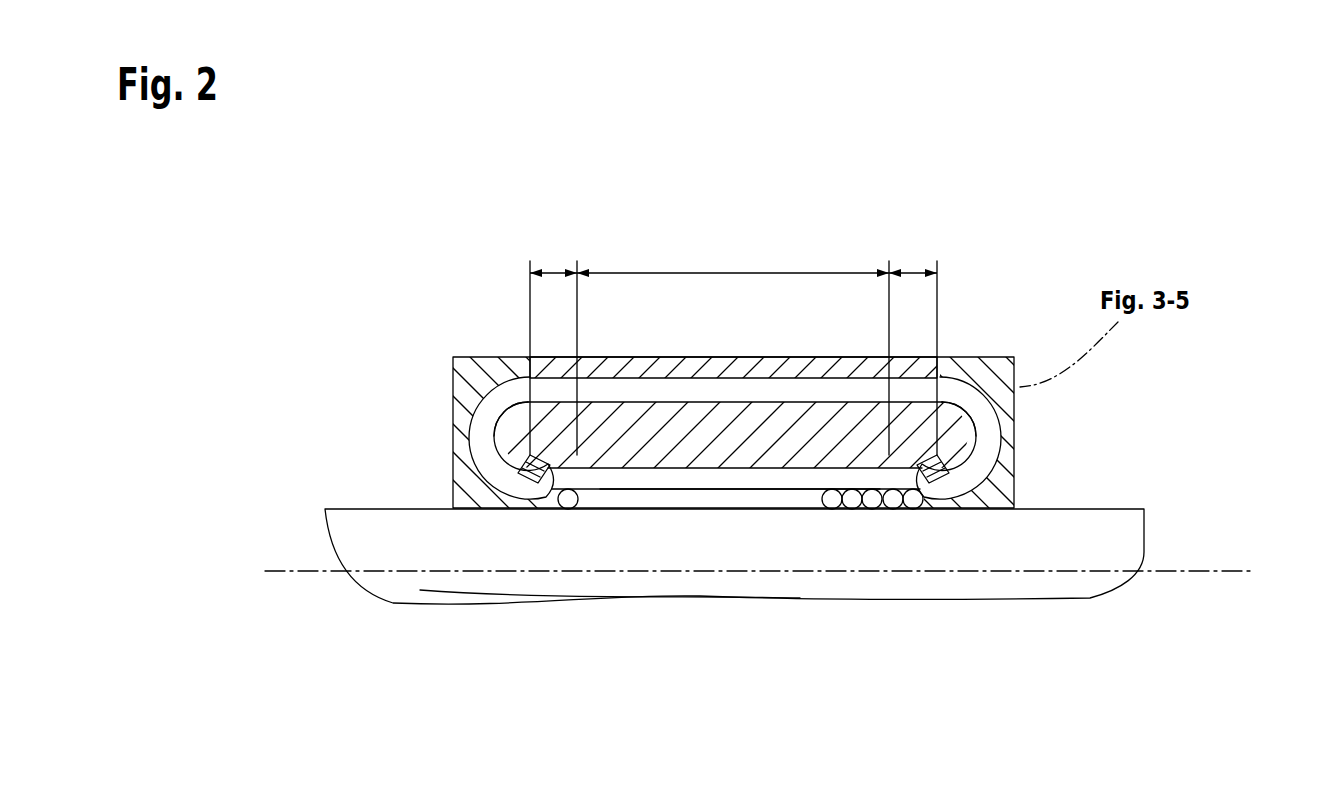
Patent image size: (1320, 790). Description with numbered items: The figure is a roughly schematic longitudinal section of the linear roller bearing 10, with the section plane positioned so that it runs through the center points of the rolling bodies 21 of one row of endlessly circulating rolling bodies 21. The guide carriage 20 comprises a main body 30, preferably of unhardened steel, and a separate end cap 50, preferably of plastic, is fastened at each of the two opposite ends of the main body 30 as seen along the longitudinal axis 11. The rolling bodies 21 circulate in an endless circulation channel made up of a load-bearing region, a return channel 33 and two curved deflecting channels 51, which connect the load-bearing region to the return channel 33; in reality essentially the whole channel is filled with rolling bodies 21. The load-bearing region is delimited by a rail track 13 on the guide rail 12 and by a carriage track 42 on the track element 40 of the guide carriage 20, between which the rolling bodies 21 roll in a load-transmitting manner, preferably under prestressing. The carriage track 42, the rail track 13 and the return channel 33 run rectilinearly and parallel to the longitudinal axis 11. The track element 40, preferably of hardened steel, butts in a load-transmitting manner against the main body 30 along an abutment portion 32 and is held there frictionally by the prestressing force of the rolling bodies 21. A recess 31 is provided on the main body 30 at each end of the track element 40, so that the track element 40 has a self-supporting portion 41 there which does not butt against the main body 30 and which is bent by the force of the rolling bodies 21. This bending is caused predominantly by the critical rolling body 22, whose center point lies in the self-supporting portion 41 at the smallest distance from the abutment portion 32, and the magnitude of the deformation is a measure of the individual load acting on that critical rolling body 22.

The linear roller bearing 10 is at (1198, 178).
The longitudinal axis 11 is at (1198, 572).
The guide rail 12 is at (415, 588).
The rail track 13 is at (1125, 510).
The guide carriage 20 is at (465, 376).
The rolling bodies 21 is at (833, 509).
The critical rolling body 22 is at (568, 509).
The main body 30 is at (795, 368).
The recess 31 is at (520, 468).
The abutment portion 32 is at (736, 272).
The return channel 33 is at (657, 382).
The track element 40 is at (688, 476).
The self-supporting portion 41 is at (556, 272).
The carriage track 42 is at (762, 492).
The end cap 50 is at (488, 368).
The deflecting channels 51 is at (482, 427).